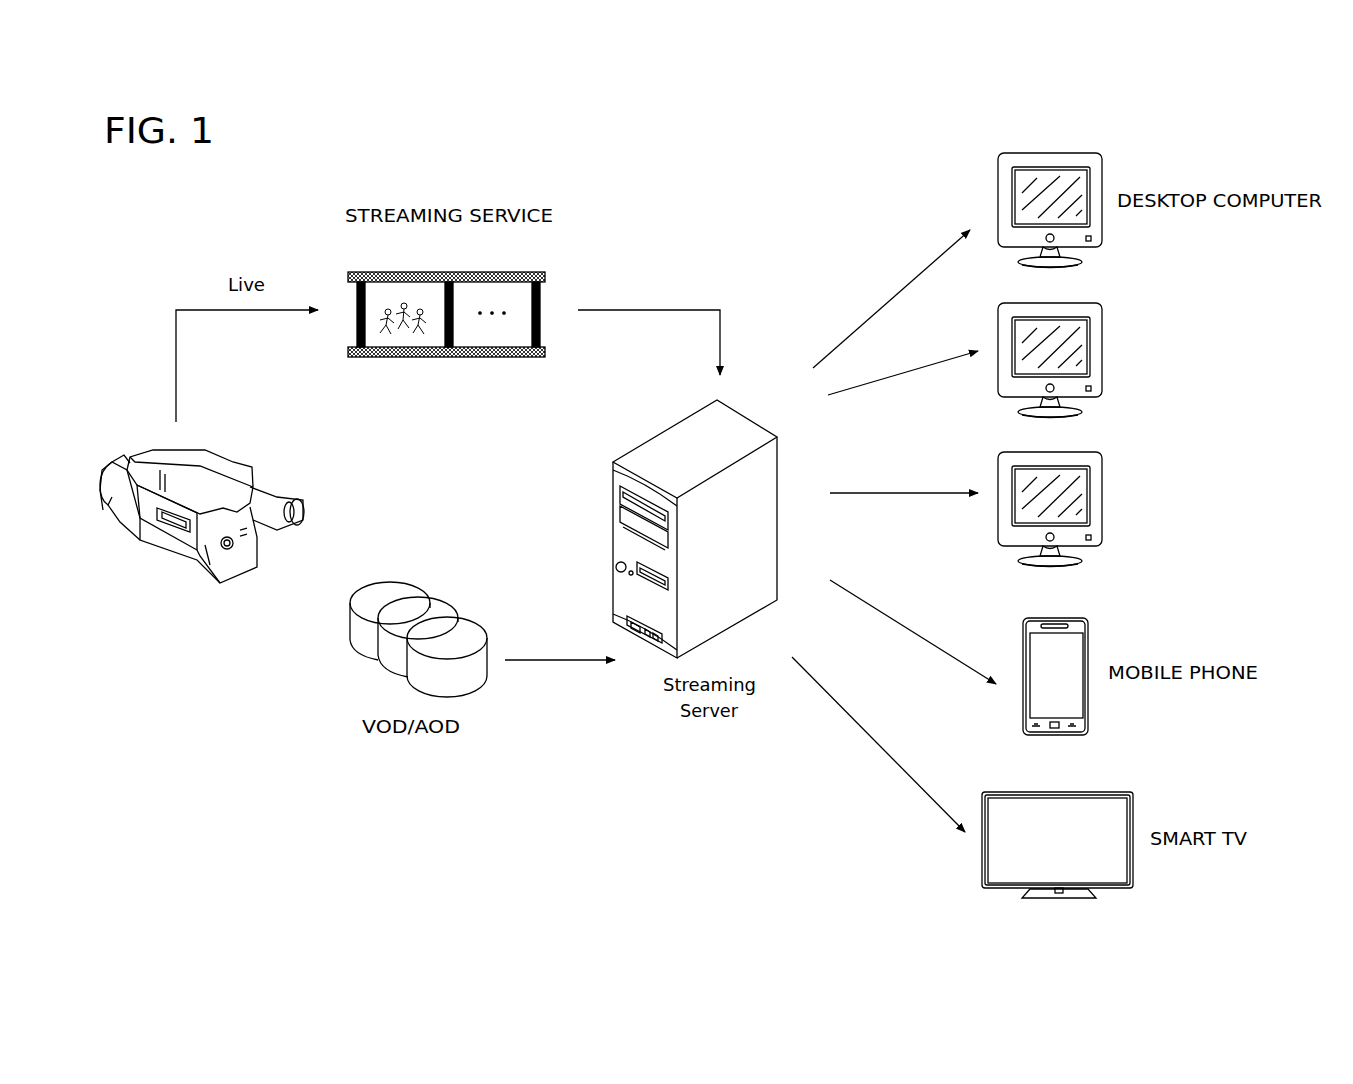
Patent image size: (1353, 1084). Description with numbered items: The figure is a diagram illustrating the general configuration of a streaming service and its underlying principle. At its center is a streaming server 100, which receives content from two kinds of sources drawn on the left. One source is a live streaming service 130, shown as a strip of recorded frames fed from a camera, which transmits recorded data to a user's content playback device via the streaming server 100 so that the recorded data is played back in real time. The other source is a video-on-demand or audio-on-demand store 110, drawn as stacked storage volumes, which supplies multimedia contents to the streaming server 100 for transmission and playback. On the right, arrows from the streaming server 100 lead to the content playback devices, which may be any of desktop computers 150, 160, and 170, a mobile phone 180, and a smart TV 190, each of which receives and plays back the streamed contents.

The streaming server 100 is at (750, 418).
The VOD/AOD content storage 110 is at (397, 582).
The live streaming service 130 is at (447, 272).
The desktop computer 150 is at (1050, 152).
The desktop computer 160 is at (1050, 302).
The desktop computer 170 is at (1050, 451).
The mobile phone 180 is at (1057, 618).
The smart TV 190 is at (1058, 792).